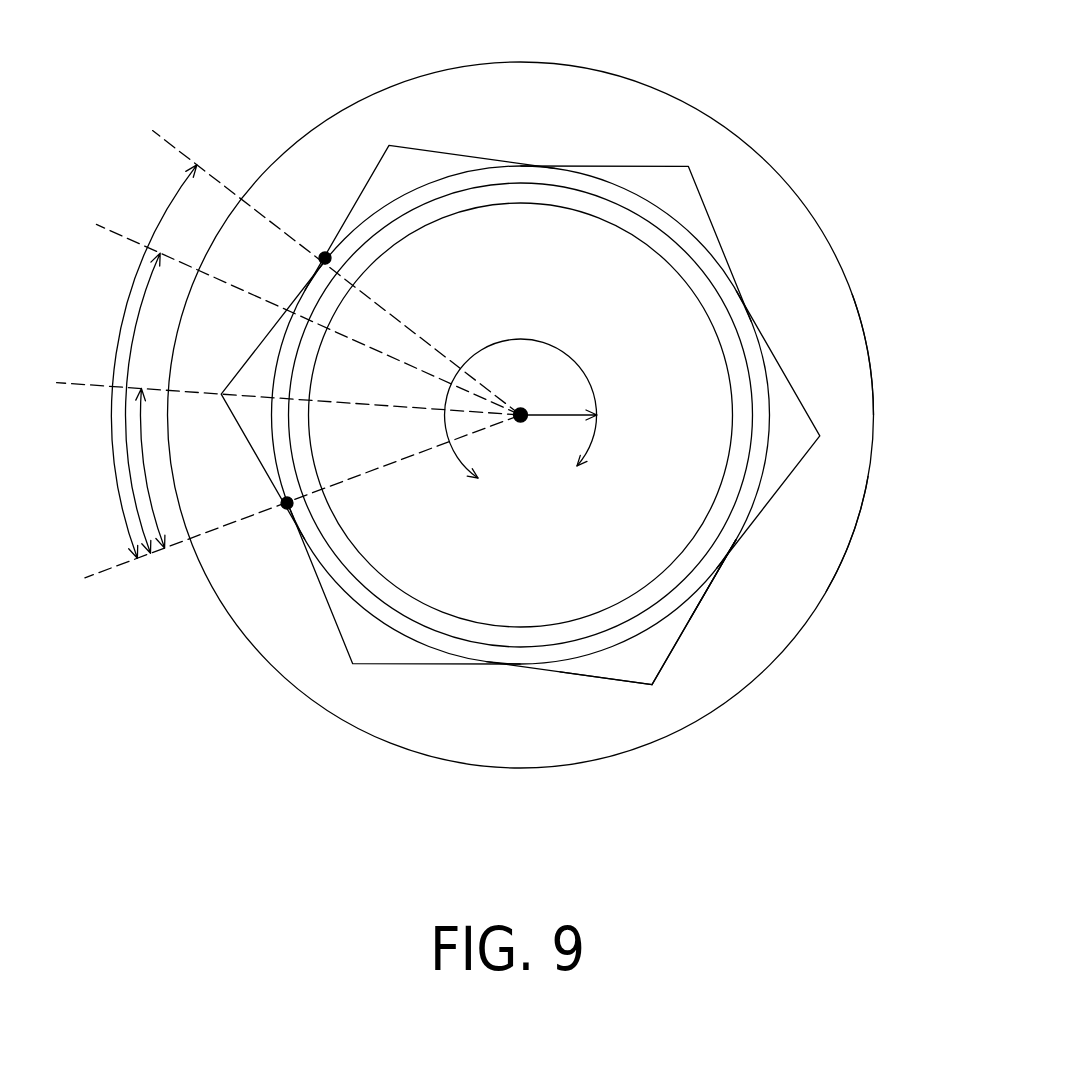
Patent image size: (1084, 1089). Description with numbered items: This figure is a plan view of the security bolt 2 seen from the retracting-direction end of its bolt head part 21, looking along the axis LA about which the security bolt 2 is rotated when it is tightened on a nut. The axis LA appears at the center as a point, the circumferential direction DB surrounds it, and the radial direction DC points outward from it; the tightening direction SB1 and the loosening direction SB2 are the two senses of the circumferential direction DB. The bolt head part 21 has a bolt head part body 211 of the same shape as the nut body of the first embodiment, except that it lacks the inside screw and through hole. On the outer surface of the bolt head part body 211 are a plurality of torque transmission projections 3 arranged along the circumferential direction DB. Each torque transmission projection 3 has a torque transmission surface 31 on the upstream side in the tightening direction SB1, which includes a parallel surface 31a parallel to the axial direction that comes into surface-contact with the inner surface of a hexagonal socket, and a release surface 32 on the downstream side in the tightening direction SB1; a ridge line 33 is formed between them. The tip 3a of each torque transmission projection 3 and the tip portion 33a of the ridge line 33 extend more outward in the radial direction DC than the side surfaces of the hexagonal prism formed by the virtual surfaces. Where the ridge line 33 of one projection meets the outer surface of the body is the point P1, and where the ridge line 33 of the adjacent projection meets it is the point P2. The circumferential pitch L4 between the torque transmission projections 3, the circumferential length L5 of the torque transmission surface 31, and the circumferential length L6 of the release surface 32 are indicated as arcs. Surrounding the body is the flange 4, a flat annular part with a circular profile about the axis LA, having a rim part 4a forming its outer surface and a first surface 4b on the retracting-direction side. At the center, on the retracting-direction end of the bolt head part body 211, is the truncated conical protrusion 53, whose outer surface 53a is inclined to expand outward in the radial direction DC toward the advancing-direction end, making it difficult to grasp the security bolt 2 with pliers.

The security bolt 2 is at (868, 115).
The torque transmission projection 3 is at (574, 492).
The tip of the torque transmission projection 3a is at (353, 664).
The flange 4 is at (765, 620).
The rim part 4a is at (858, 530).
The first surface 4b is at (850, 383).
The bolt head part 21 is at (614, 415).
The bolt head part body 211 is at (740, 303).
The torque transmission surface 31 is at (762, 651).
The parallel surface 31a is at (678, 645).
The release surface 32 is at (625, 662).
The ridge line 33 is at (688, 625).
The tip portion of the ridge line 33a is at (655, 685).
The truncated conical protrusion 53 is at (590, 238).
The outer surface of the truncated conical protrusion 53a is at (750, 353).
The point P1 is at (325, 258).
The point P2 is at (287, 503).
The circumferential pitch L4 is at (166, 206).
The circumferential length of the torque transmission surface L5 is at (146, 465).
The circumferential length of the release surface L6 is at (136, 330).
The circumferential direction DB is at (521, 394).
The radial direction DC is at (559, 403).
The axis LA is at (521, 422).
The tightening direction SB1 is at (602, 474).
The loosening direction SB2 is at (452, 486).